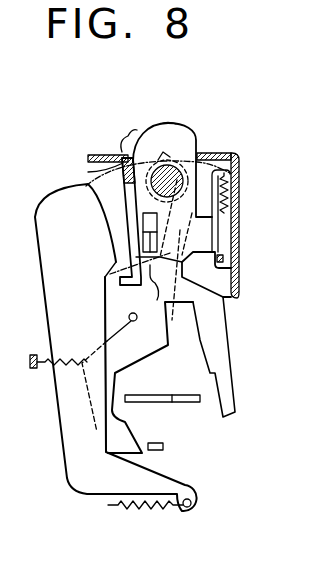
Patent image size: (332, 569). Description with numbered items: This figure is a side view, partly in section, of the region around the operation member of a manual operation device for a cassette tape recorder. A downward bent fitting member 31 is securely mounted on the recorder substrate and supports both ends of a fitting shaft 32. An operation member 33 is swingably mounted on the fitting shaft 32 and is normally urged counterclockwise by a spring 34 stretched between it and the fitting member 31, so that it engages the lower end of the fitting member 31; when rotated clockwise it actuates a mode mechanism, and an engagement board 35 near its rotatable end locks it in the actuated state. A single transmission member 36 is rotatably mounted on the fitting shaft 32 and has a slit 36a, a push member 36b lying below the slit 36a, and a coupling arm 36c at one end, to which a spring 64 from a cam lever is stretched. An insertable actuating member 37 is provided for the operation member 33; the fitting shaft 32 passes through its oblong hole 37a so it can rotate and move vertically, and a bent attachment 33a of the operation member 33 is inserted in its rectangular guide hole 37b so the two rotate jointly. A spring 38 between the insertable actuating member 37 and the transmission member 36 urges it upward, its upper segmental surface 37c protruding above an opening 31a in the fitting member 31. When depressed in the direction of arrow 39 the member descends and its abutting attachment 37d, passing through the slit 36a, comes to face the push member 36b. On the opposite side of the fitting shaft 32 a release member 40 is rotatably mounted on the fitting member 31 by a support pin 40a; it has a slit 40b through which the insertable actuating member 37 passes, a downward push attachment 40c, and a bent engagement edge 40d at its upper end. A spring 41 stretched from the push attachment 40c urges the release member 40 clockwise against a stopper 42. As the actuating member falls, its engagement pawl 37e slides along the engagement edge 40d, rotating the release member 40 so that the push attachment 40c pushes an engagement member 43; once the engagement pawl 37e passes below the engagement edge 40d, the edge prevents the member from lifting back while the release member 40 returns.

The fitting member 31 is at (237, 160).
The opening 31a is at (210, 153).
The fitting shaft 32 is at (128, 199).
The operation member 33 is at (224, 323).
The bent attachment 33a is at (148, 242).
The spring 34 is at (157, 290).
The engagement board 35 is at (170, 395).
The transmission member 36 is at (239, 171).
The slit 36a is at (232, 221).
The push member 36b is at (239, 272).
The coupling arm 36c is at (64, 462).
The insertable actuating member 37 is at (200, 152).
The oblong hole 37a is at (167, 168).
The guide hole 37b is at (146, 223).
The upper segmental surface 37c is at (153, 113).
The abutting attachment 37d is at (224, 246).
The engagement pawl 37e is at (126, 137).
The spring 38 is at (229, 195).
The arrow 39 is at (170, 117).
The release member 40 is at (90, 161).
The support pin 40a is at (107, 297).
The slit 40b is at (139, 178).
The push attachment 40c is at (150, 377).
The engagement edge 40d is at (112, 150).
The spring 41 is at (44, 364).
The stopper 42 is at (129, 318).
The engagement member 43 is at (160, 450).
The spring 64 is at (150, 508).